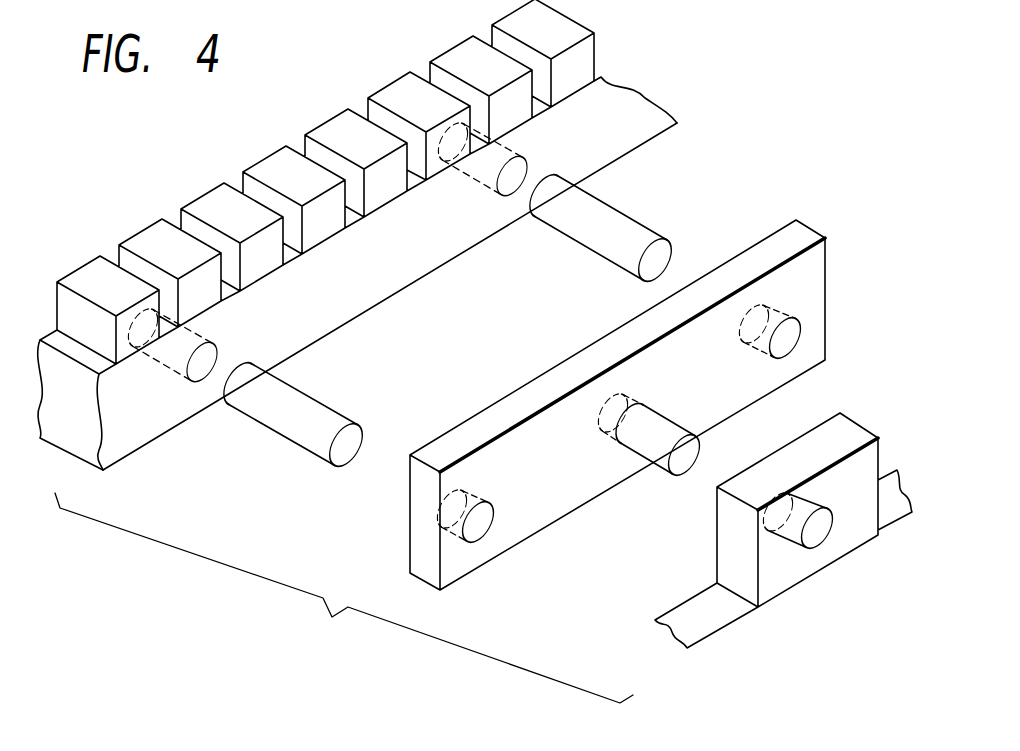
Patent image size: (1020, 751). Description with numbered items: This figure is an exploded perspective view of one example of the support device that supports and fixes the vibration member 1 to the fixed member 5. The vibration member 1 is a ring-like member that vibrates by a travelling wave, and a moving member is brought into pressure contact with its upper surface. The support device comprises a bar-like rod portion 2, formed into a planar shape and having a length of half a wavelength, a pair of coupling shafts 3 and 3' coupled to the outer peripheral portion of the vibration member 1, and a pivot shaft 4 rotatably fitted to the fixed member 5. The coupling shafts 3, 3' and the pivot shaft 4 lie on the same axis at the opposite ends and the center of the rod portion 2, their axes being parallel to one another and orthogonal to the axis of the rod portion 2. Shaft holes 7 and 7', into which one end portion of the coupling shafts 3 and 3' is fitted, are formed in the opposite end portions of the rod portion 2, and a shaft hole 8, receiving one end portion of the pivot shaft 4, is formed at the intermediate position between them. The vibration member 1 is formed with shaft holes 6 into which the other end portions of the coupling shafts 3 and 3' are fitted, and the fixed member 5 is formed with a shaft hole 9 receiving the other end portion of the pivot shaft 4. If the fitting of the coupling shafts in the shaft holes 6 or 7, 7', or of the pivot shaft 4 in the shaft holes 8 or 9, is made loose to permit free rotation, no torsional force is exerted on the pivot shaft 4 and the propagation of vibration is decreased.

The vibration member 1 is at (401, 268).
The rod portion 2 is at (563, 500).
The coupling shaft 3 is at (293, 422).
The coupling shaft 3' is at (610, 229).
The pivot shaft 4 is at (663, 455).
The fixed member 5 is at (848, 432).
The shaft hole 6 is at (204, 378).
The shaft hole 7 is at (468, 548).
The shaft hole 7' is at (802, 331).
The shaft hole 8 is at (593, 403).
The shaft hole 9 is at (815, 540).